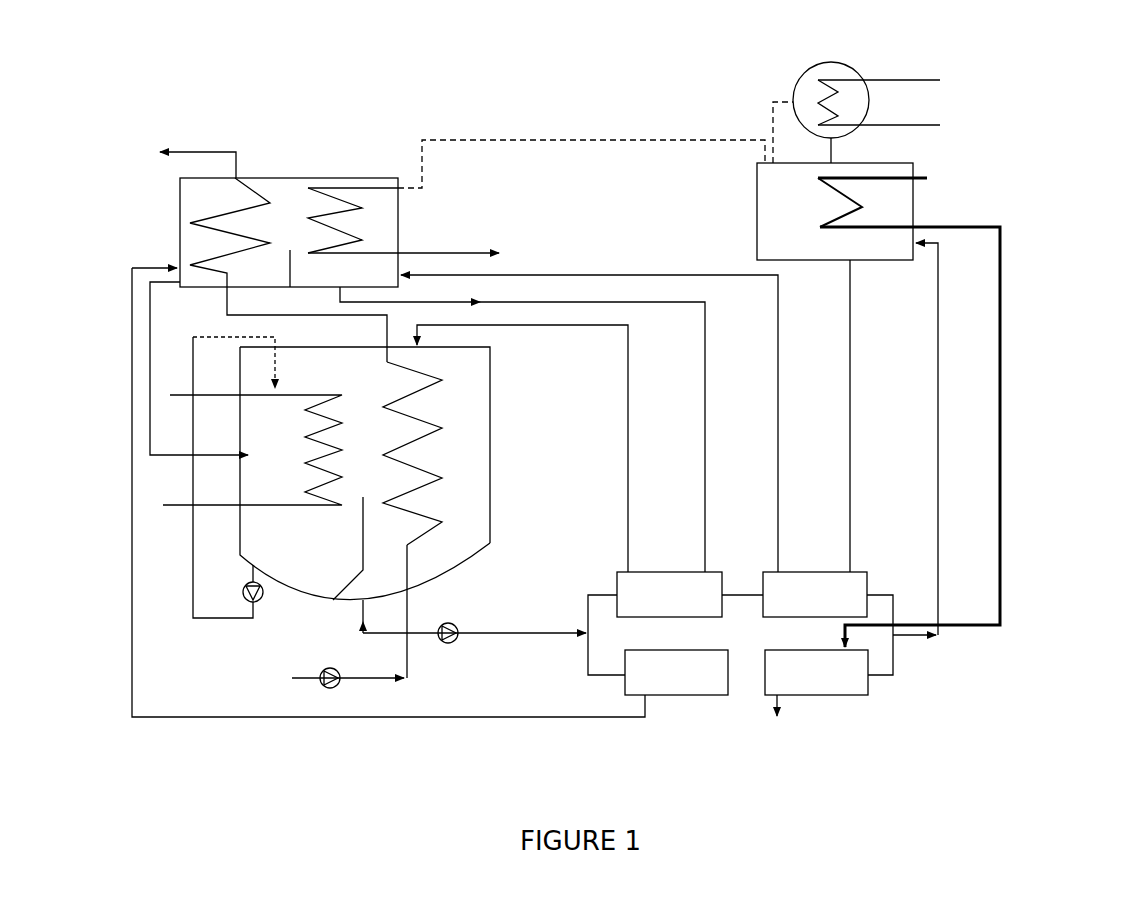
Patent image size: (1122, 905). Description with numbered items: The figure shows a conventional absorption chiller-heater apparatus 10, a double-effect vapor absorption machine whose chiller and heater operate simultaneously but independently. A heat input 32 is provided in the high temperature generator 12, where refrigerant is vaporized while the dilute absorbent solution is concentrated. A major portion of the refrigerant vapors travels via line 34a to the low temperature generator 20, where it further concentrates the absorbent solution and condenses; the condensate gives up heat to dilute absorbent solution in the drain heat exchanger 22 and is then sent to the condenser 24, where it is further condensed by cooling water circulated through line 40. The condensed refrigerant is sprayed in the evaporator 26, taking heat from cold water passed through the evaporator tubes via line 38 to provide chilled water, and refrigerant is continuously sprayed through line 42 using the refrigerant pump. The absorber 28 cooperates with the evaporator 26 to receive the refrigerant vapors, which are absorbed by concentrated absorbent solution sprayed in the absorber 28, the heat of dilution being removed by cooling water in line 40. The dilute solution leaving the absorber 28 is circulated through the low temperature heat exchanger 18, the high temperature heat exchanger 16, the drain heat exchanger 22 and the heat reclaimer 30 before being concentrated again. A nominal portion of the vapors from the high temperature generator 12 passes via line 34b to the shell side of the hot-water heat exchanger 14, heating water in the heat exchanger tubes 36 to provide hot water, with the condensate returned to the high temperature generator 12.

The absorption chiller-heater apparatus 10 is at (1046, 247).
The high temperature generator 12 is at (911, 204).
The hot-water heat exchanger 14 is at (841, 65).
The high temperature heat exchanger 16 is at (854, 573).
The low temperature heat exchanger 18 is at (614, 568).
The low temperature generator 20 is at (363, 170).
The drain heat exchanger 22 is at (665, 730).
The condenser 24 is at (177, 243).
The evaporator 26 is at (301, 573).
The absorber 28 is at (453, 554).
The heat reclaimer 30 is at (844, 690).
The heat input 32 is at (1004, 396).
The line 34a is at (573, 138).
The line 34b is at (769, 130).
The heat exchanger tubes 36 is at (921, 75).
The line 38 is at (166, 501).
The line 40 is at (296, 684).
The line 42 is at (182, 596).